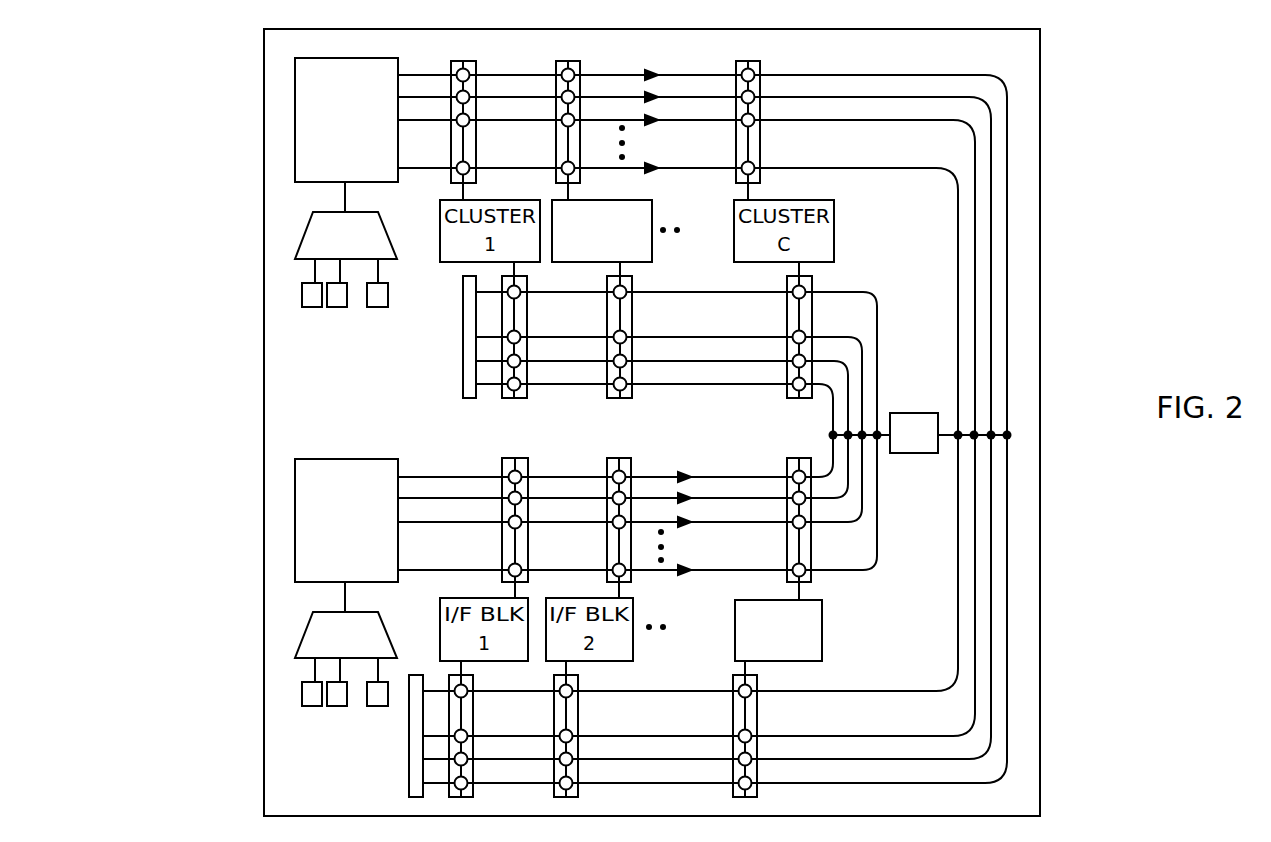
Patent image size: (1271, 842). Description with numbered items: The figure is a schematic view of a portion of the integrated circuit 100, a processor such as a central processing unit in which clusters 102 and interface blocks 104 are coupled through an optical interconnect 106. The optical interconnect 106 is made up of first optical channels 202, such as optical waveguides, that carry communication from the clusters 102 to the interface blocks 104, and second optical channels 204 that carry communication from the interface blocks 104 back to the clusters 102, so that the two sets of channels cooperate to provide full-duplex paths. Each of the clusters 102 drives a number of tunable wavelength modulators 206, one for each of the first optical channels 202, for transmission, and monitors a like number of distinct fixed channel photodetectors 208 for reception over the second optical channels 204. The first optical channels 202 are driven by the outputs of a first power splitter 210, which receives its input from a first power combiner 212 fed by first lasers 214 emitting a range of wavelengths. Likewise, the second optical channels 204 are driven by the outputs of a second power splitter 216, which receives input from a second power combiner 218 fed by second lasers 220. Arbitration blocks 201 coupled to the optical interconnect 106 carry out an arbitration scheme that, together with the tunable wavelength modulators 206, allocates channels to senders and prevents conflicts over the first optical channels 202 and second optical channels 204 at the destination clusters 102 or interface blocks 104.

The integrated circuit 100 is at (155, 68).
The clusters 102 is at (584, 201).
The interface blocks 104 is at (812, 613).
The optical interconnect 106 is at (907, 358).
The arbitration blocks 201 is at (893, 425).
The first optical channels 202 is at (876, 74).
The second optical channels 204 is at (878, 515).
The tunable wavelength modulators 206 is at (464, 74).
The fixed channel photodetectors 208 is at (508, 384).
The first power splitter 210 is at (302, 93).
The first power combiner 212 is at (308, 220).
The first lasers 214 is at (307, 295).
The second power splitter 216 is at (302, 492).
The second power combiner 218 is at (308, 630).
The second lasers 220 is at (306, 692).